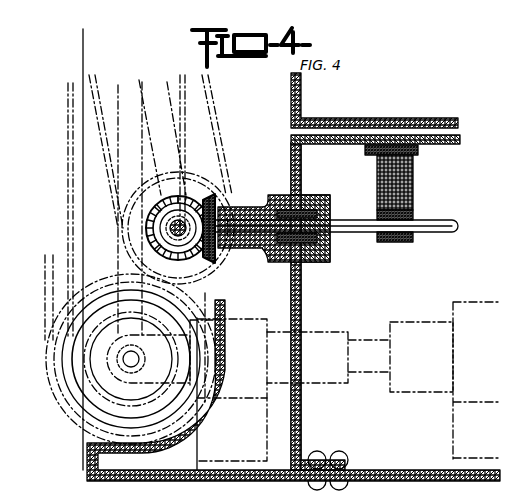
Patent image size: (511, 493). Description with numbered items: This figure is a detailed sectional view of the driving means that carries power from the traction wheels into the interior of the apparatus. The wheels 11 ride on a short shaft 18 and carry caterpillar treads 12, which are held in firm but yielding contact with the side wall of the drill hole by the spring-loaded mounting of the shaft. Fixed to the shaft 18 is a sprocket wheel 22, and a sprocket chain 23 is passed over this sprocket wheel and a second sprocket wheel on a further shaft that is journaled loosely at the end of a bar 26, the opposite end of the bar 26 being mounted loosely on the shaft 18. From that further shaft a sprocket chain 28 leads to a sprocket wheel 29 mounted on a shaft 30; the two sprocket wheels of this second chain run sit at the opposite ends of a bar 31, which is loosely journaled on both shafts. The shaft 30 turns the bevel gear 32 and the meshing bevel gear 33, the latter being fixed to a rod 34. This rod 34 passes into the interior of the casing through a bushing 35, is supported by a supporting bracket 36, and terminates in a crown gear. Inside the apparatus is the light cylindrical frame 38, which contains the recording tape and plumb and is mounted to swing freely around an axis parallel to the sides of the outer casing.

The wheels 11 is at (55, 348).
The caterpillar treads 12 is at (47, 292).
The shaft 18 is at (139, 358).
The sprocket wheel 22 is at (70, 372).
The sprocket chain 23 is at (67, 186).
The bar 26 is at (118, 268).
The sprocket chain 28 is at (218, 115).
The sprocket wheel 29 is at (228, 187).
The shaft 30 is at (150, 203).
The bar 31 is at (168, 98).
The bevel gear 32 is at (147, 233).
The bevel gear 33 is at (214, 265).
The rod 34 is at (343, 220).
The bushing 35 is at (308, 197).
The supporting bracket 36 is at (407, 192).
The cylindrical frame 38 is at (300, 98).